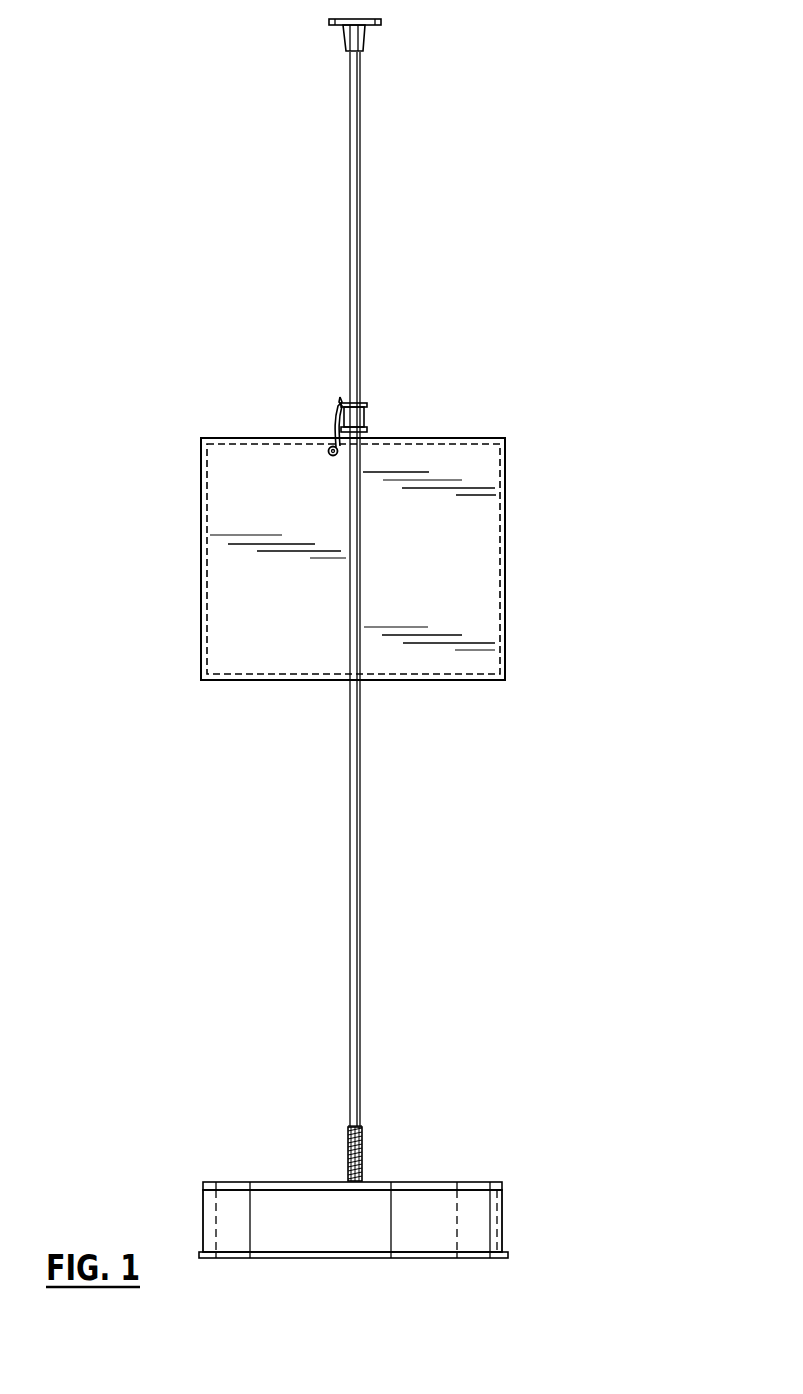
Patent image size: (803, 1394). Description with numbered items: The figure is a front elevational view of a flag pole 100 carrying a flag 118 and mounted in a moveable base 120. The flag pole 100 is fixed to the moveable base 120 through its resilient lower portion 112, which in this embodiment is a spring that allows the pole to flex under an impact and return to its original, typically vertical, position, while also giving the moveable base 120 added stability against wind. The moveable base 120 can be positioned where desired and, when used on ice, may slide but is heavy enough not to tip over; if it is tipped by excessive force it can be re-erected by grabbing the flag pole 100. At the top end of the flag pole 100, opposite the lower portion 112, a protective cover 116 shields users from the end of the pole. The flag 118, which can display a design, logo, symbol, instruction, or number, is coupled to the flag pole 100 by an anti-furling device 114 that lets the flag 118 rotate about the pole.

The flag pole 100 is at (355, 232).
The resilient lower portion 112 is at (354, 1150).
The anti-furling device 114 is at (362, 415).
The protective cover 116 is at (355, 41).
The flag 118 is at (486, 553).
The moveable base 120 is at (498, 1218).